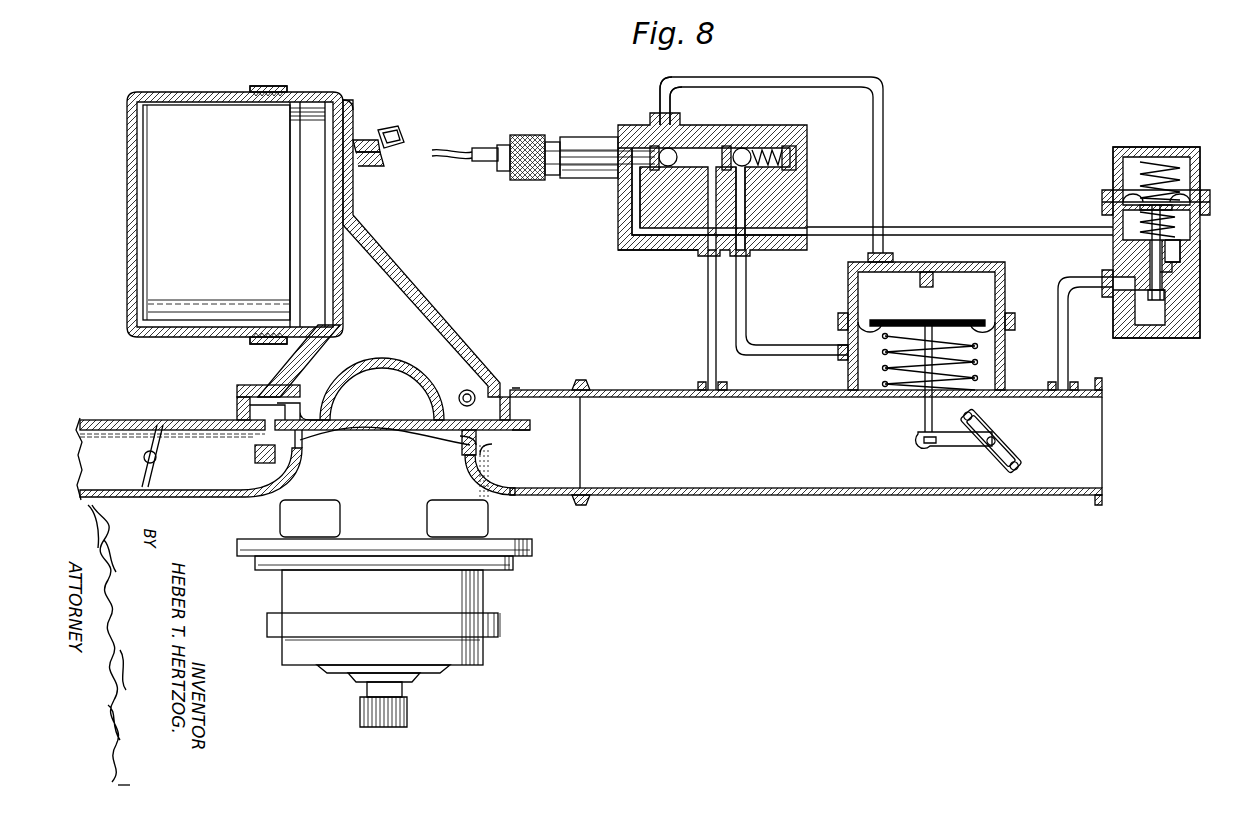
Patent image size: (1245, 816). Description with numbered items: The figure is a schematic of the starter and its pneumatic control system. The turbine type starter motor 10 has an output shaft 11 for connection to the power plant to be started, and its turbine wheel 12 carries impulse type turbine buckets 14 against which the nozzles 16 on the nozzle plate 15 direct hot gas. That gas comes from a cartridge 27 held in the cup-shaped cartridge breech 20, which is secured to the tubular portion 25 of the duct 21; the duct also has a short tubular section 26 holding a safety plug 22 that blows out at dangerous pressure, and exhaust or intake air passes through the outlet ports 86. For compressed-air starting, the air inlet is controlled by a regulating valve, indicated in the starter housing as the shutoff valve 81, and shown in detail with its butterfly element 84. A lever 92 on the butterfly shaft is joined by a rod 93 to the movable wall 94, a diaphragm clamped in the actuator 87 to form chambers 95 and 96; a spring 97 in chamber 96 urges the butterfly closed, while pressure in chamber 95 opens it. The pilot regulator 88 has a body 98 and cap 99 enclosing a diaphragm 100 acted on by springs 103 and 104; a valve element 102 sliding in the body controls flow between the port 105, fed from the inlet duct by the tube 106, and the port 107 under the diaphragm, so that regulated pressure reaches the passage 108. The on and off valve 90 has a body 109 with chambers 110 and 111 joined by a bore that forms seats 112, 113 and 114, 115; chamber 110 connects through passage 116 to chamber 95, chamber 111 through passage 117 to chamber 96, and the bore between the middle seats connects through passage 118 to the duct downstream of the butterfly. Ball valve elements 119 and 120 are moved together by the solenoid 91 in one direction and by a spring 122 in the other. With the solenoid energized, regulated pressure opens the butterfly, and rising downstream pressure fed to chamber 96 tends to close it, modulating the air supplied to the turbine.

The starter motor 10 is at (504, 583).
The output shaft 11 is at (408, 712).
The turbine wheel 12 is at (386, 424).
The impulse type turbine buckets 14 is at (462, 440).
The nozzle plate 15 is at (386, 358).
The nozzles 16 is at (466, 390).
The cartridge breech 20 is at (127, 224).
The duct 21 is at (410, 272).
The safety plug 22 is at (372, 140).
The tubular portion 25 is at (287, 88).
The tubular section 26 is at (402, 132).
The cartridge 27 is at (216, 242).
The shutoff valve 81 is at (150, 472).
The butterfly element 84 is at (1005, 446).
The outlet ports 86 is at (308, 510).
The actuator 87 is at (1005, 292).
The pilot regulator 88 is at (1101, 198).
The on and off valve 90 is at (610, 233).
The solenoid 91 is at (576, 180).
The lever 92 is at (952, 448).
The rod 93 is at (924, 420).
The movable wall 94 is at (962, 320).
The pressure receiving chamber 95 is at (872, 297).
The pressure receiving chamber 96 is at (872, 370).
The spring 97 is at (956, 364).
The body 98 is at (1155, 338).
The cap 99 is at (1172, 150).
The diaphragm 100 is at (1195, 192).
The valve element 102 is at (1166, 293).
The spring 103 is at (1178, 226).
The spring 104 is at (1160, 160).
The port 105 is at (1138, 283).
The tube 106 is at (1068, 352).
The port 107 is at (1180, 268).
The passage 108 is at (984, 227).
The body 109 is at (660, 252).
The chamber 110 is at (652, 168).
The chamber 111 is at (742, 148).
The valve seat 112 is at (653, 148).
The valve seat 113 is at (676, 166).
The valve seat 114 is at (722, 147).
The valve seat 115 is at (752, 168).
The passage 116 is at (746, 77).
The passage 117 is at (746, 295).
The passage 118 is at (708, 331).
The ball valve element 119 is at (665, 120).
The ball valve element 120 is at (762, 148).
The spring 122 is at (790, 146).